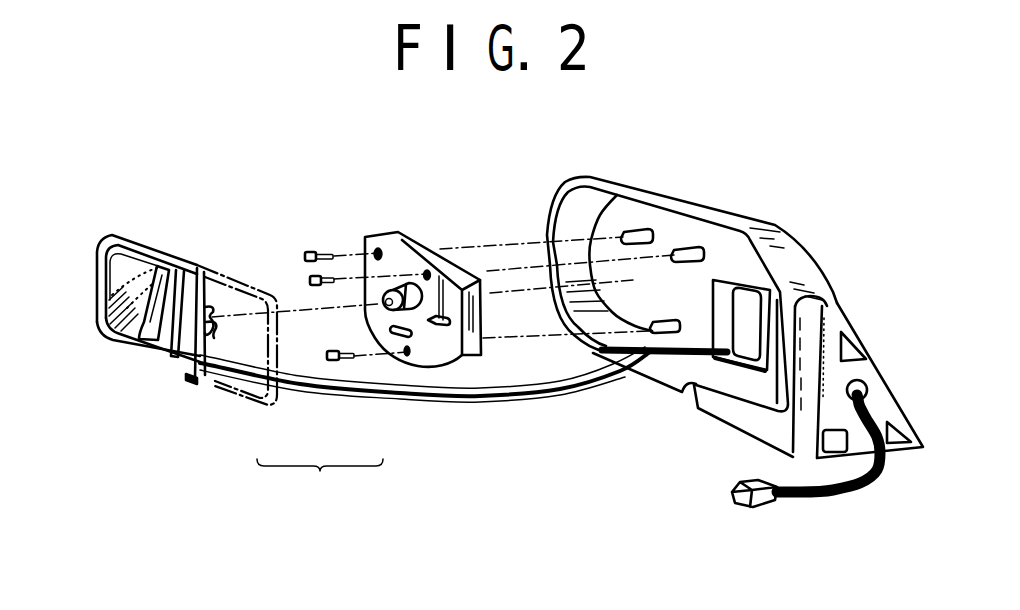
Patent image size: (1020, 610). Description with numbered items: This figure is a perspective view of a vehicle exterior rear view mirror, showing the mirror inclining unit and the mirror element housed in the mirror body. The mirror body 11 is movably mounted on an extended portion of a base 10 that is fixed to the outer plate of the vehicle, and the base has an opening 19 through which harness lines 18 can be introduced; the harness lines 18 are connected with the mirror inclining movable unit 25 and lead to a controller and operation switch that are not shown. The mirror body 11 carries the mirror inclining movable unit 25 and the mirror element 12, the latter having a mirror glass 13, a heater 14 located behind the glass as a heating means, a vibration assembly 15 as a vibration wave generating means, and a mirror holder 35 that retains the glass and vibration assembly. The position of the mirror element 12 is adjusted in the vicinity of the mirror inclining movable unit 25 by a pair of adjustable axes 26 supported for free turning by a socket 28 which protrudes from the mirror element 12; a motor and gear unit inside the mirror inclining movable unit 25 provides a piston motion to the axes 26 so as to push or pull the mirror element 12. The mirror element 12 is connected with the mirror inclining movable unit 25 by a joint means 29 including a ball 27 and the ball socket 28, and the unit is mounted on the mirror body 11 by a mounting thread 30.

The base 10 is at (863, 347).
The mirror body 11 is at (727, 187).
The mirror element 12 is at (157, 238).
The mirror glass 13 is at (112, 258).
The heater 14 is at (150, 328).
The vibration assembly 15 is at (160, 352).
The harness lines 18 is at (881, 478).
The opening 19 is at (868, 385).
The mirror inclining movable unit 25 is at (420, 237).
The adjustable axes 26 is at (441, 324).
The ball 27 is at (388, 306).
The ball socket 28 is at (215, 327).
The joint means 29 is at (320, 479).
The mounting thread 30 is at (331, 267).
The mirror holder 35 is at (195, 380).